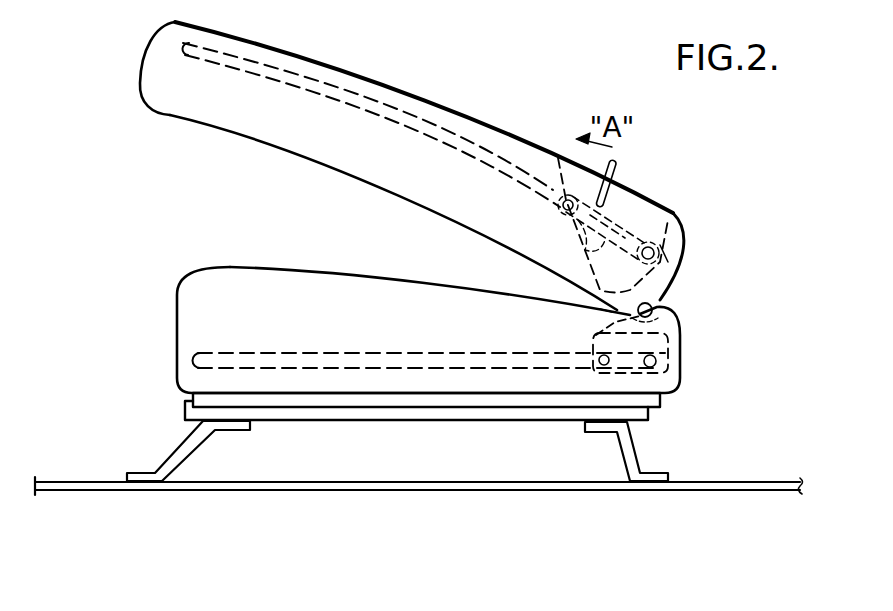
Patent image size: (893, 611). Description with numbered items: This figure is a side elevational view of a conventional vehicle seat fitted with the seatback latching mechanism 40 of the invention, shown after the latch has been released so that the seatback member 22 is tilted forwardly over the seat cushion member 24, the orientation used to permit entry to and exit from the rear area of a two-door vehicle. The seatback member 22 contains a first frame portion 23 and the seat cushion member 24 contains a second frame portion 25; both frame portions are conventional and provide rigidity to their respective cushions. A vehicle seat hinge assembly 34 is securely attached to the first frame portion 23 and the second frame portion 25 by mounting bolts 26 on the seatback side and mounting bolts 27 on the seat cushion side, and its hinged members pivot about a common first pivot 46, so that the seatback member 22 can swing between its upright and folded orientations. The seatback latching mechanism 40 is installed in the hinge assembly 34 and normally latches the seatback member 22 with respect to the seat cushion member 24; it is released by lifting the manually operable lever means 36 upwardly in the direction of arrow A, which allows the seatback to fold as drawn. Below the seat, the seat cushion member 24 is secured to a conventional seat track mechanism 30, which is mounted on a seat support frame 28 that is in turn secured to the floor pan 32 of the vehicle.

The seatback member 22 is at (398, 82).
The first frame portion 23 is at (287, 88).
The seat cushion member 24 is at (229, 264).
The second frame portion 25 is at (288, 352).
The mounting bolts 26 is at (560, 157).
The mounting bolts 27 is at (625, 341).
The seat support frame 28 is at (208, 440).
The seat track mechanism 30 is at (401, 418).
The floor pan 32 is at (457, 488).
The vehicle seat hinge assembly 34 is at (590, 312).
The manually operable lever means 36 is at (610, 190).
The seatback latching mechanism 40 is at (672, 262).
The common first pivot 46 is at (653, 306).